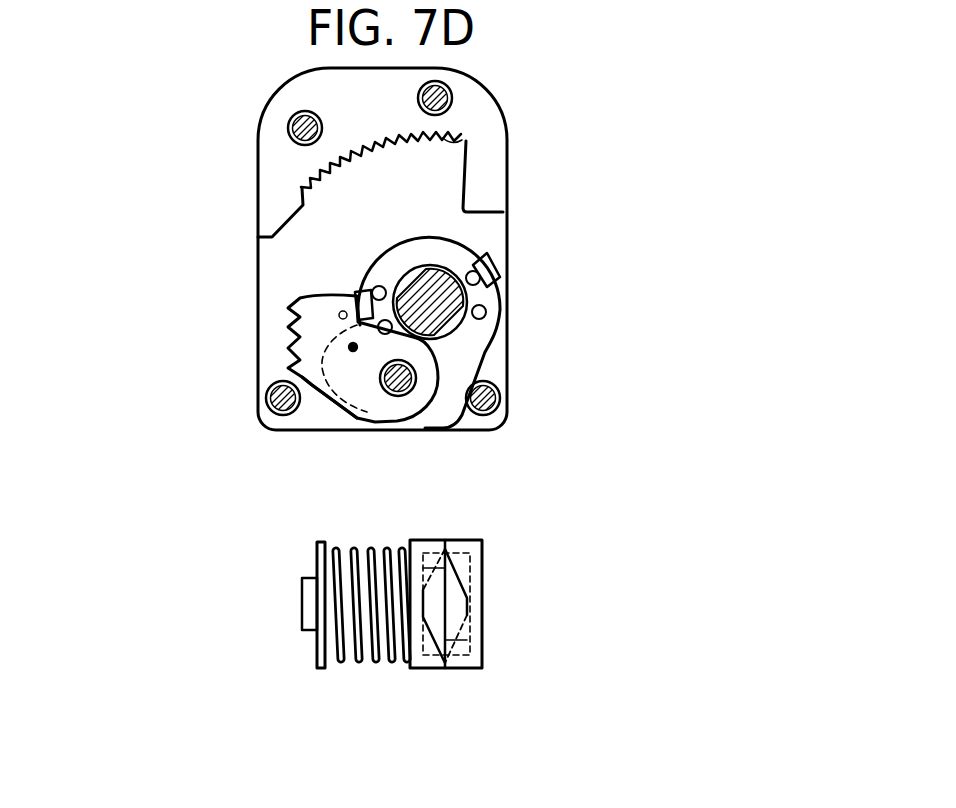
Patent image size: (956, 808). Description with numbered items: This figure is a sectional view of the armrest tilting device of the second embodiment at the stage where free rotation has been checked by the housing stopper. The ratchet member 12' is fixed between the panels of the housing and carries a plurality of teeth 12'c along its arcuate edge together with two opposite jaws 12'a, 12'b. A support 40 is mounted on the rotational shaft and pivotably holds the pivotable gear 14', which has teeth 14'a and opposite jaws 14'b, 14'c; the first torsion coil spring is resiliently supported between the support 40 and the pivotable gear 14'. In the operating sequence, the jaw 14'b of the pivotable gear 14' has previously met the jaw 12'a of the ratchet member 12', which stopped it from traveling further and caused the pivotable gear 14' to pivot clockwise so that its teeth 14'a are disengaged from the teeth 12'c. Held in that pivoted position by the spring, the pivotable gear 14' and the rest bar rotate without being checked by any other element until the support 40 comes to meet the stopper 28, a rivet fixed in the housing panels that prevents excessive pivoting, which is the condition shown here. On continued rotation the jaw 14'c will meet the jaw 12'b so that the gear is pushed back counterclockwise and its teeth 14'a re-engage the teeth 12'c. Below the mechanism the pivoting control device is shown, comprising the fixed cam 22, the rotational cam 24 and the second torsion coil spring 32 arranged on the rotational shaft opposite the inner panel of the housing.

The ratchet member 12' is at (432, 233).
The jaw of the ratchet member 12'a is at (185, 228).
The jaw of the ratchet member 12'b is at (529, 205).
The teeth of the ratchet member 12'c is at (469, 141).
The pivotable gear 14' is at (290, 358).
The teeth of the pivotable gear 14'a is at (236, 376).
The jaw of the pivotable gear 14'b is at (270, 450).
The jaw of the pivotable gear 14'c is at (249, 298).
The fixed cam 22 is at (422, 547).
The rotational cam 24 is at (477, 548).
The stopper 28 is at (507, 385).
The second torsion coil spring 32 is at (340, 548).
The support 40 is at (432, 417).